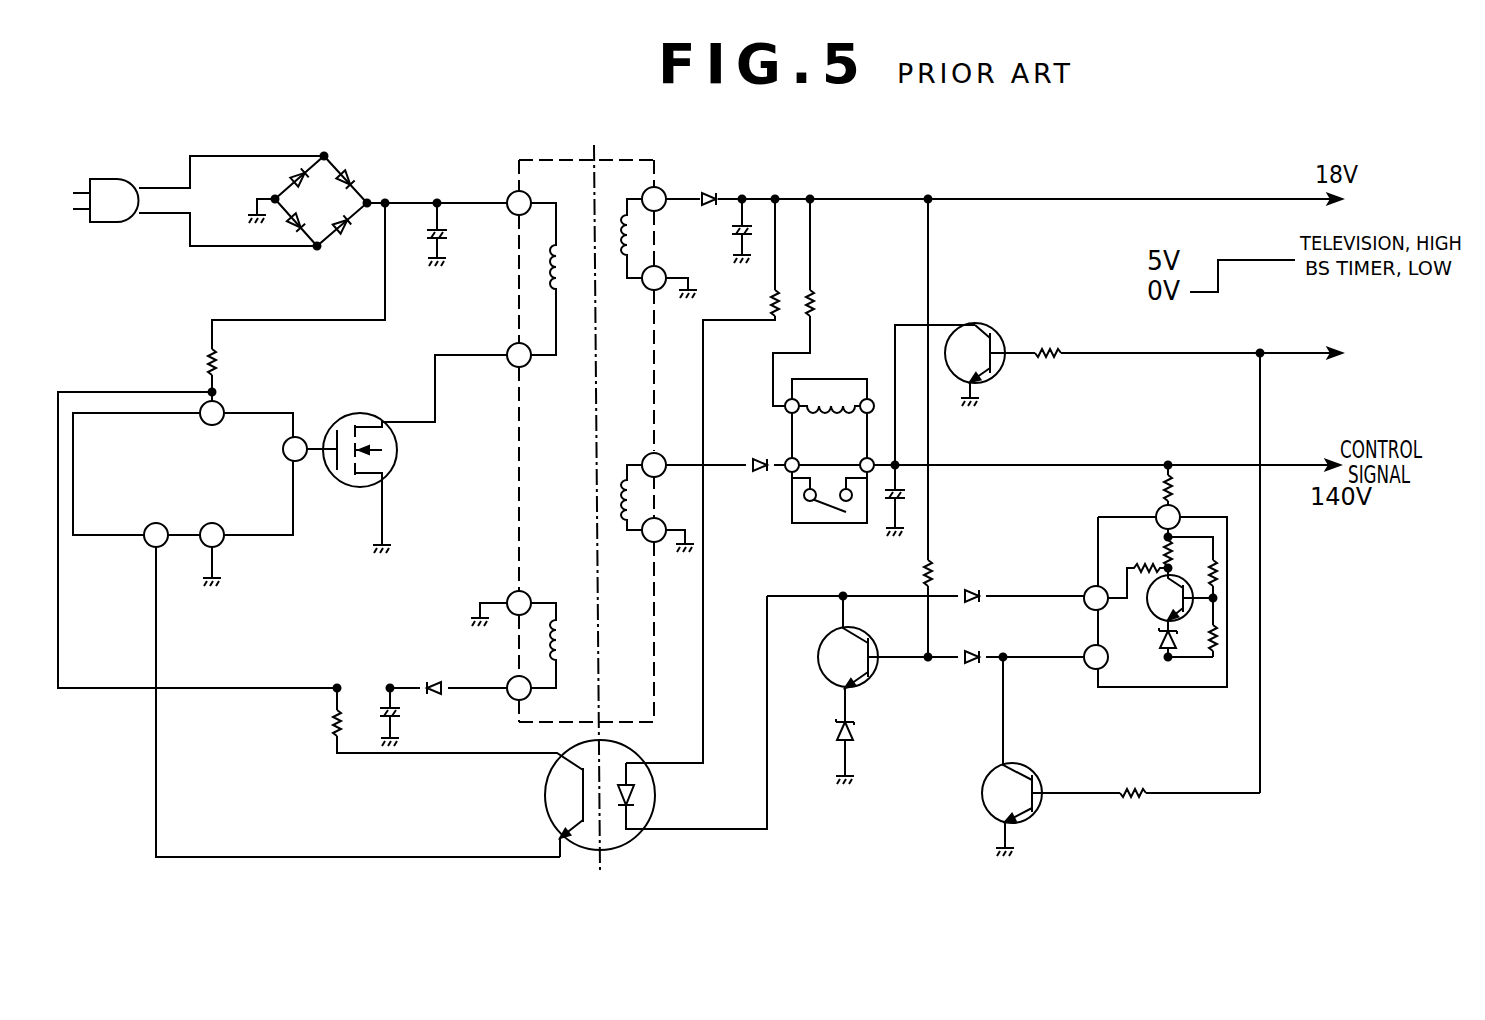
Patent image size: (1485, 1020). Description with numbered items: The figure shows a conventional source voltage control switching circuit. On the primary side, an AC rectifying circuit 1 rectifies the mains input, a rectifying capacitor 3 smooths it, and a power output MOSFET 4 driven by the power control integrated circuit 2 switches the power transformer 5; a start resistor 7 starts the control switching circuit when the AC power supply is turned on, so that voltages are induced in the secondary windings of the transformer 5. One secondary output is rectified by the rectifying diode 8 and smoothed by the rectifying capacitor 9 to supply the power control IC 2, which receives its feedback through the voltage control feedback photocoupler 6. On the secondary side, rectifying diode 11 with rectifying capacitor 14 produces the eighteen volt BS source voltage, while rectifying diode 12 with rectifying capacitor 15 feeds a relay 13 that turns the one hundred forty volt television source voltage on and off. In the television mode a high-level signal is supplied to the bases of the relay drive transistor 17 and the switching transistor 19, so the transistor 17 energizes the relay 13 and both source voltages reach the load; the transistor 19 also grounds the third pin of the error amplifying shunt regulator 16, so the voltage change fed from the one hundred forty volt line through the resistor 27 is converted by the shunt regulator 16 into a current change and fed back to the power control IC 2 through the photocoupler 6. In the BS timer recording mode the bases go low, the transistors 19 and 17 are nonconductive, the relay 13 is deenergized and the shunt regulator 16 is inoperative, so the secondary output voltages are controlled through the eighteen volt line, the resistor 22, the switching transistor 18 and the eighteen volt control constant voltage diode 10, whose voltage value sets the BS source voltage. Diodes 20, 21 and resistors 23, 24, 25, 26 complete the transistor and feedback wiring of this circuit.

The AC rectifying circuit 1 is at (372, 184).
The power control integrated circuit 2 is at (284, 423).
The rectifying capacitor 3 is at (455, 235).
The power output MOSFET 4 is at (366, 412).
The power transformer 5 is at (636, 160).
The voltage control feedback photocoupler 6 is at (657, 795).
The start resistor 7 is at (205, 367).
The rectifying diode 8 is at (436, 684).
The rectifying capacitor 9 is at (405, 715).
The 18-V control constant voltage diode 10 is at (856, 735).
The rectifying diode 11 is at (710, 192).
The rectifying diode 12 is at (758, 476).
The relay 13 is at (868, 432).
The rectifying capacitor 14 is at (730, 232).
The rectifying capacitor 15 is at (905, 497).
The error amplifying shunt regulator 16 is at (1157, 688).
The relay drive transistor 17 is at (985, 325).
The switching transistor 18 is at (876, 670).
The switching transistor 19 is at (1036, 775).
The diode 20 is at (963, 668).
The diode 21 is at (985, 603).
The resistor 22 is at (936, 565).
The resistor 23 is at (1044, 358).
The resistor 24 is at (1130, 800).
The resistor 25 is at (770, 300).
The resistor 26 is at (814, 296).
The resistor 27 is at (1160, 490).